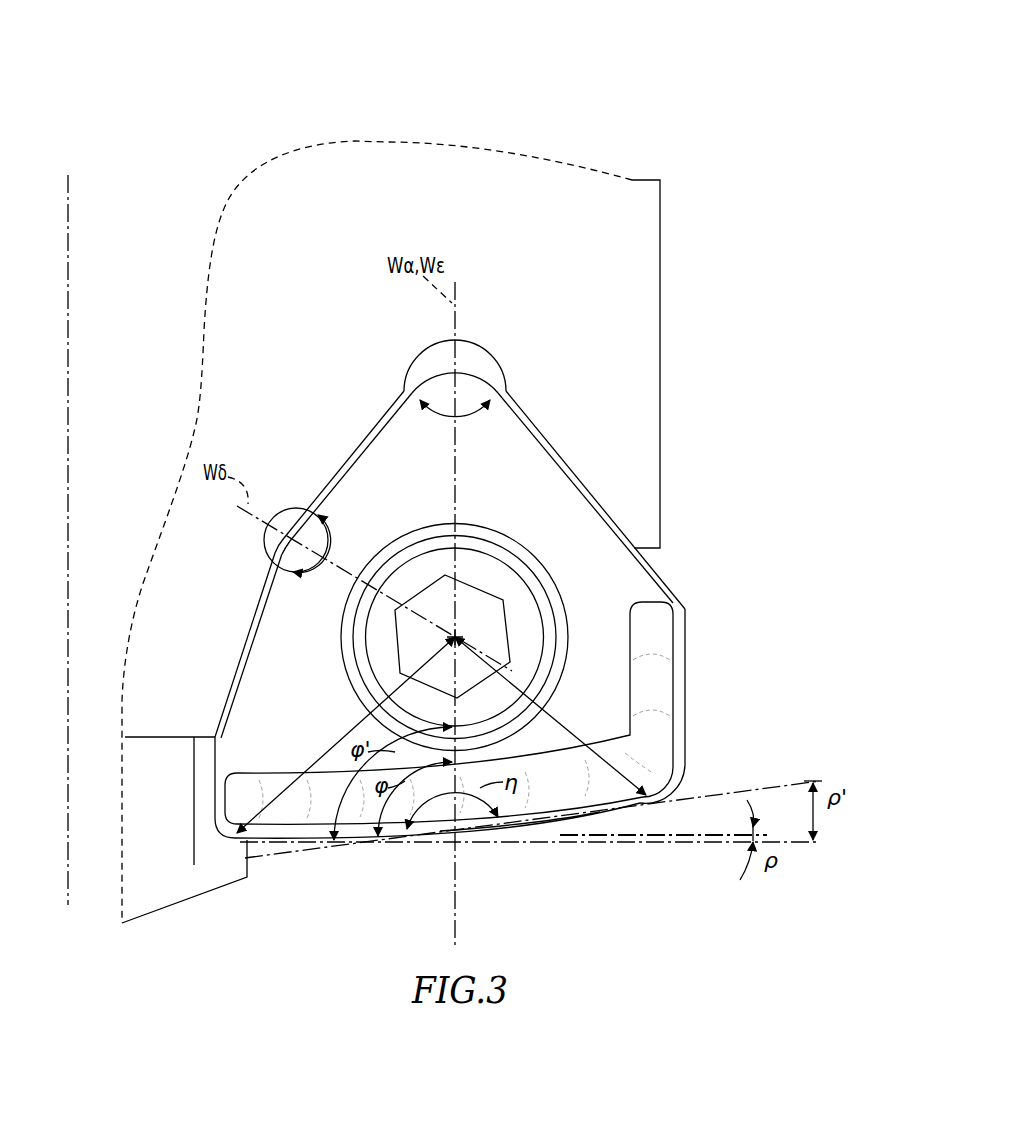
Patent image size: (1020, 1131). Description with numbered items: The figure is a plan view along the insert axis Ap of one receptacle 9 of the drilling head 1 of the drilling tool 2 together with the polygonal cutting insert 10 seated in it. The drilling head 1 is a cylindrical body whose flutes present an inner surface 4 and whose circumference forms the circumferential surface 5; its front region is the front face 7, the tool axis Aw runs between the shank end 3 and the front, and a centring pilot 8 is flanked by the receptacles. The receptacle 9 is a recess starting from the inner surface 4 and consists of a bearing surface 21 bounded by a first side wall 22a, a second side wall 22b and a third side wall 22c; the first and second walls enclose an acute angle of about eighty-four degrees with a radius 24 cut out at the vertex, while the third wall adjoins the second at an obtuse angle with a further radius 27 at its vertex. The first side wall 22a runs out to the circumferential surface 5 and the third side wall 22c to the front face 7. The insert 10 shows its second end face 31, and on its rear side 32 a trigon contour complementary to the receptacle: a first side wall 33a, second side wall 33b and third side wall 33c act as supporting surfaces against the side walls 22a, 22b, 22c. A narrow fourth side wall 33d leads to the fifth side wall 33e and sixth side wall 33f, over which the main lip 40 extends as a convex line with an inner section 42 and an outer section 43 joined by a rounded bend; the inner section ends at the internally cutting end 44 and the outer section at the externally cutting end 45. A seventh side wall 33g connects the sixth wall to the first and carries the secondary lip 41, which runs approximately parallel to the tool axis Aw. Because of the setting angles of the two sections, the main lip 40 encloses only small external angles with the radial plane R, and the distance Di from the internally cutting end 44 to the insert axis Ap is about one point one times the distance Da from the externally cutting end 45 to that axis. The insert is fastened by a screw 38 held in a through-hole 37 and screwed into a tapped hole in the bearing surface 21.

The drilling head 1 is at (584, 100).
The drilling tool 2 is at (555, 132).
The shank end 3 is at (484, 78).
The inner surface 4 is at (388, 155).
The circumferential surface 5 is at (661, 268).
The front face 7 is at (166, 740).
The pilot 8 is at (168, 907).
The receptacle 9 is at (479, 605).
The polygonal cutting insert 10 is at (664, 585).
The bearing surface 21 is at (356, 457).
The first side wall 22a is at (553, 449).
The second side wall 22b is at (379, 420).
The third side wall 22c is at (246, 637).
The radius 24 is at (485, 346).
The further radius 27 is at (288, 508).
The second end face 31 is at (579, 539).
The rear side 32 is at (468, 314).
The first side wall 33a is at (541, 447).
The second side wall 33b is at (371, 443).
The third side wall 33c is at (257, 628).
The fourth side wall 33d is at (218, 750).
The fifth side wall 33e is at (437, 851).
The sixth side wall 33f is at (434, 826).
The seventh side wall 33g is at (503, 687).
The through-hole 37 is at (518, 544).
The screw 38 is at (521, 615).
The main lip 40 is at (544, 820).
The secondary lip 41 is at (685, 683).
The inner section of the main lip 42 is at (298, 843).
The outer section of the main lip 43 is at (563, 818).
The internally cutting end 44 is at (234, 840).
The externally cutting end 45 is at (641, 800).
The tool axis Aw is at (72, 193).
The insert axis Ap is at (458, 635).
The distance between internally cutting end and insert axis Di is at (338, 742).
The distance between externally cutting end and insert axis Da is at (556, 719).
The radial plane R is at (712, 843).